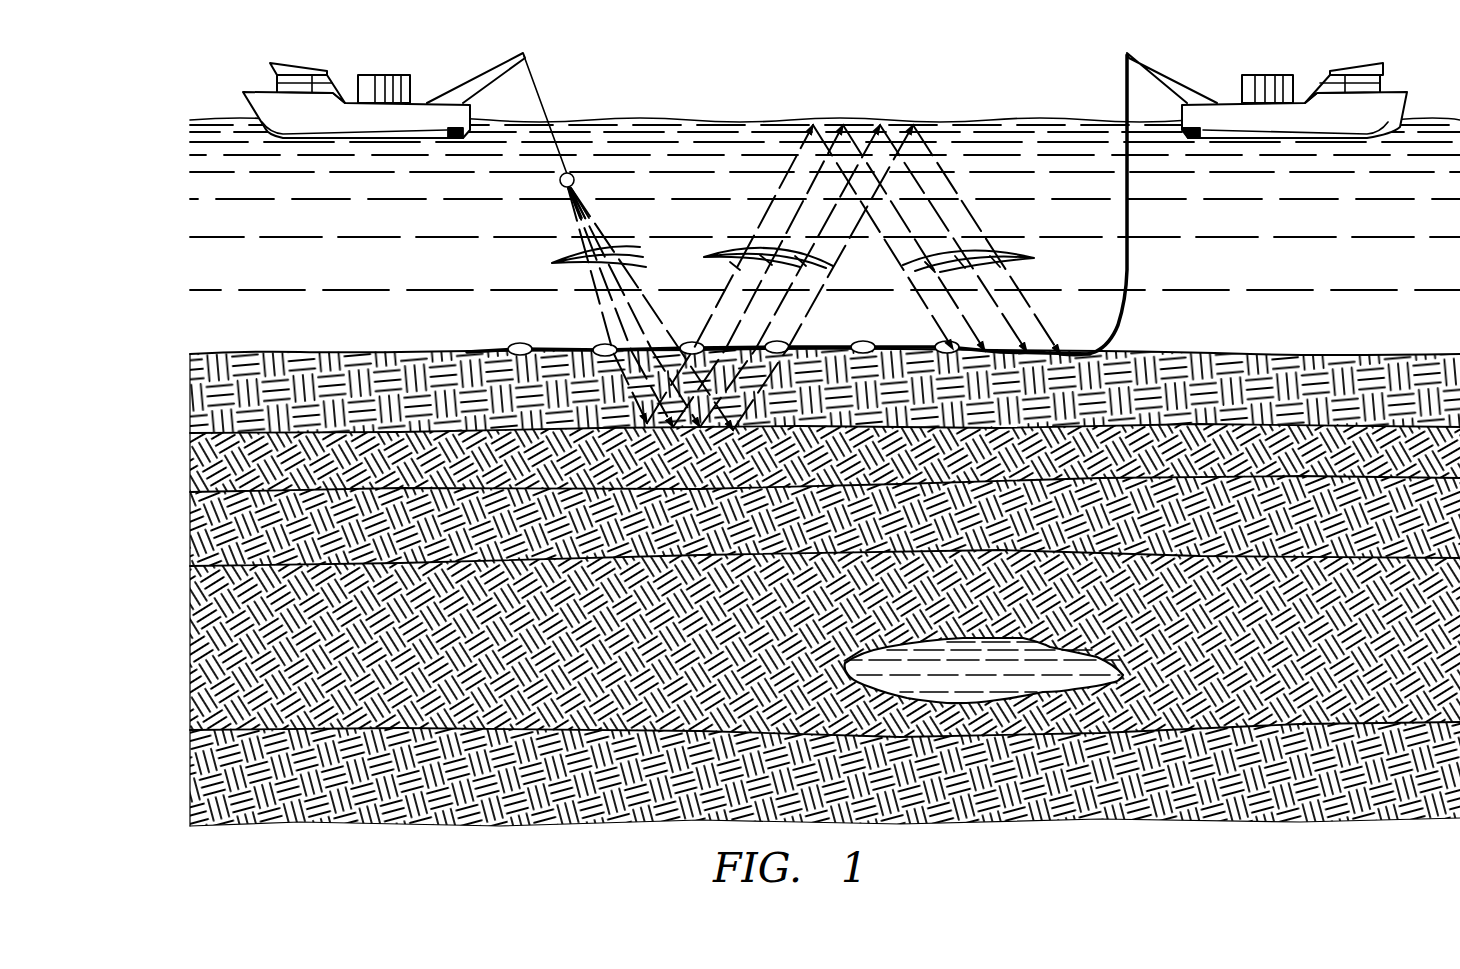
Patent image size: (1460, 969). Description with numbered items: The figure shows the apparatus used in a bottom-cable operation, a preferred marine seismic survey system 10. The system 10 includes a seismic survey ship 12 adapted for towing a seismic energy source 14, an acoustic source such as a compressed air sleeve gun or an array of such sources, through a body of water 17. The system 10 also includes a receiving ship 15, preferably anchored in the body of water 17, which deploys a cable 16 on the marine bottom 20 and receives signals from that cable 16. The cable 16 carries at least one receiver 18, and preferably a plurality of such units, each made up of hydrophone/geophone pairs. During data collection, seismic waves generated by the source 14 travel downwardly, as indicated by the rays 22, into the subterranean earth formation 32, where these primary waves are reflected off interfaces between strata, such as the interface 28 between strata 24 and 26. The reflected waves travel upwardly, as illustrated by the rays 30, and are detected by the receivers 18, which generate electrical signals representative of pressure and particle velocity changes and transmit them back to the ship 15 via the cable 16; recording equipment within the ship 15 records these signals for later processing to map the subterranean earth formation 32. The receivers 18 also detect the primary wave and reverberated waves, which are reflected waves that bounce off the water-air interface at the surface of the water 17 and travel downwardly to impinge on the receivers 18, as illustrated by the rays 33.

The marine seismic survey system 10 is at (182, 321).
The seismic survey ship 12 is at (300, 66).
The seismic energy source 14 is at (558, 180).
The receiving ship 15 is at (1353, 67).
The cable 16 is at (1130, 222).
The body of water 17 is at (1388, 277).
The receiver 18 is at (520, 342).
The marine bottom 20 is at (1362, 353).
The rays 22 is at (570, 261).
The stratum 24 is at (1153, 397).
The stratum 26 is at (1205, 452).
The interface 28 is at (1283, 422).
The rays 30 is at (712, 257).
The subterranean earth formation 32 is at (182, 520).
The rays 33 is at (1034, 258).